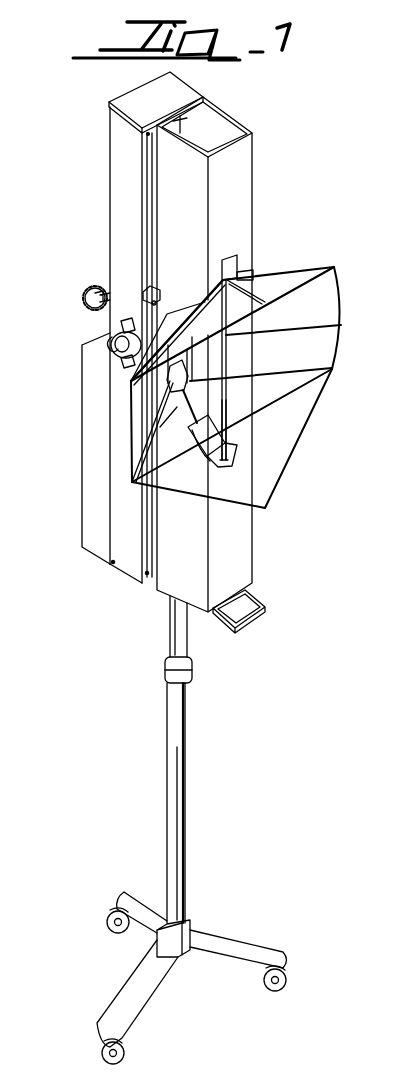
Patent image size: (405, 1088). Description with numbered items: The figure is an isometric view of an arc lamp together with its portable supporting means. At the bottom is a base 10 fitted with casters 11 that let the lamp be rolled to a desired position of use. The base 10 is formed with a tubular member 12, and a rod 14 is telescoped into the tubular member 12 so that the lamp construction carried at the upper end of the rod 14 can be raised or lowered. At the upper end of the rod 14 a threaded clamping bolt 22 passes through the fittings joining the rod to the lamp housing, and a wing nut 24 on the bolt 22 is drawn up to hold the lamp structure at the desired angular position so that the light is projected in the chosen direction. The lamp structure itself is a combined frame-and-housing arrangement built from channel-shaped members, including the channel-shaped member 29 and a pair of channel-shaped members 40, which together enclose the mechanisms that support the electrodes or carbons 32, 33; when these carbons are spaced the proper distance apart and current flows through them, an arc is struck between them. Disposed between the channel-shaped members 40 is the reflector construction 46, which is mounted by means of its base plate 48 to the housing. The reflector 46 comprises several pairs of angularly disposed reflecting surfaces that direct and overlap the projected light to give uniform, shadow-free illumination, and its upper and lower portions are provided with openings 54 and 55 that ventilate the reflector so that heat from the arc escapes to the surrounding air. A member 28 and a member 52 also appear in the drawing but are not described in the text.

The base 10 is at (208, 930).
The casters 11 is at (118, 934).
The tubular member 12 is at (187, 748).
The rod 14 is at (170, 630).
The threaded clamping bolt 22 is at (112, 347).
The wing nut 24 is at (115, 360).
The side panel 28 is at (104, 193).
The channel-shaped member 29 is at (113, 145).
The carbon 32 is at (227, 347).
The carbon 33 is at (225, 400).
The channel-shaped members 40 is at (253, 163).
The reflector construction 46 is at (291, 268).
The base plate 48 is at (140, 296).
The reflector flap 52 is at (153, 426).
The opening 54 is at (250, 275).
The opening 55 is at (208, 462).